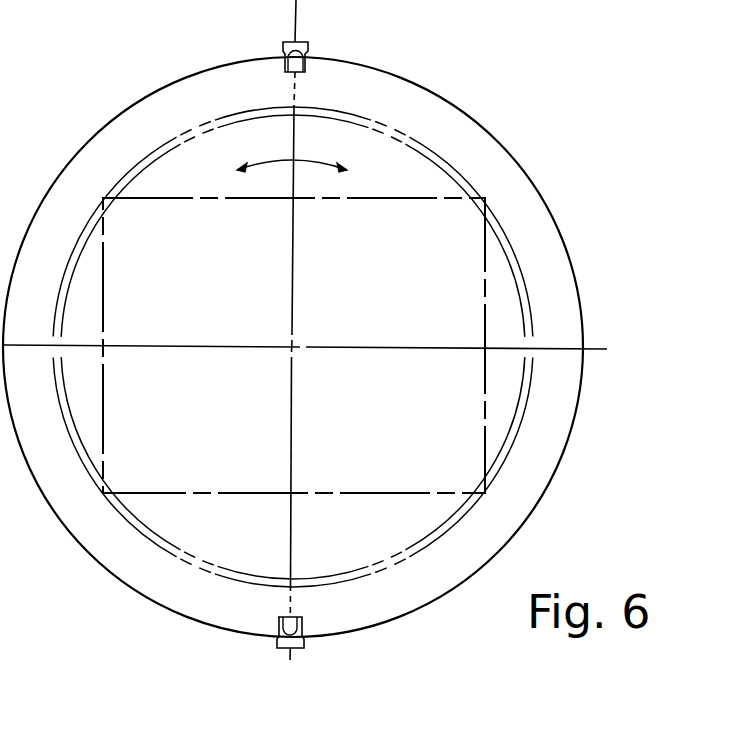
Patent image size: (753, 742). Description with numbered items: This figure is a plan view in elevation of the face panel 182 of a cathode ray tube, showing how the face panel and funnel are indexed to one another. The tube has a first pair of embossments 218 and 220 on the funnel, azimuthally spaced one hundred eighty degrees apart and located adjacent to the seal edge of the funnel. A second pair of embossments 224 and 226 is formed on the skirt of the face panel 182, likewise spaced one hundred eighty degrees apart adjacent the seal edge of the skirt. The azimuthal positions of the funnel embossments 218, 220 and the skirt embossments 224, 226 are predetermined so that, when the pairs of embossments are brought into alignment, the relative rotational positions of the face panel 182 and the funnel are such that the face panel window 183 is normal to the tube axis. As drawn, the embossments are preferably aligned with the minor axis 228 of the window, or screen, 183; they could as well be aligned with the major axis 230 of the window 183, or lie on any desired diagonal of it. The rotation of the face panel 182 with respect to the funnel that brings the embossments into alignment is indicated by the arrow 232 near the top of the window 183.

The face panel 182 is at (502, 140).
The face panel window 183 is at (472, 260).
The embossment 218 is at (307, 43).
The embossment 220 is at (300, 650).
The embossment 224 is at (297, 70).
The embossment 226 is at (302, 627).
The minor axis 228 is at (297, 98).
The major axis 230 is at (560, 348).
The arrow 232 is at (262, 163).